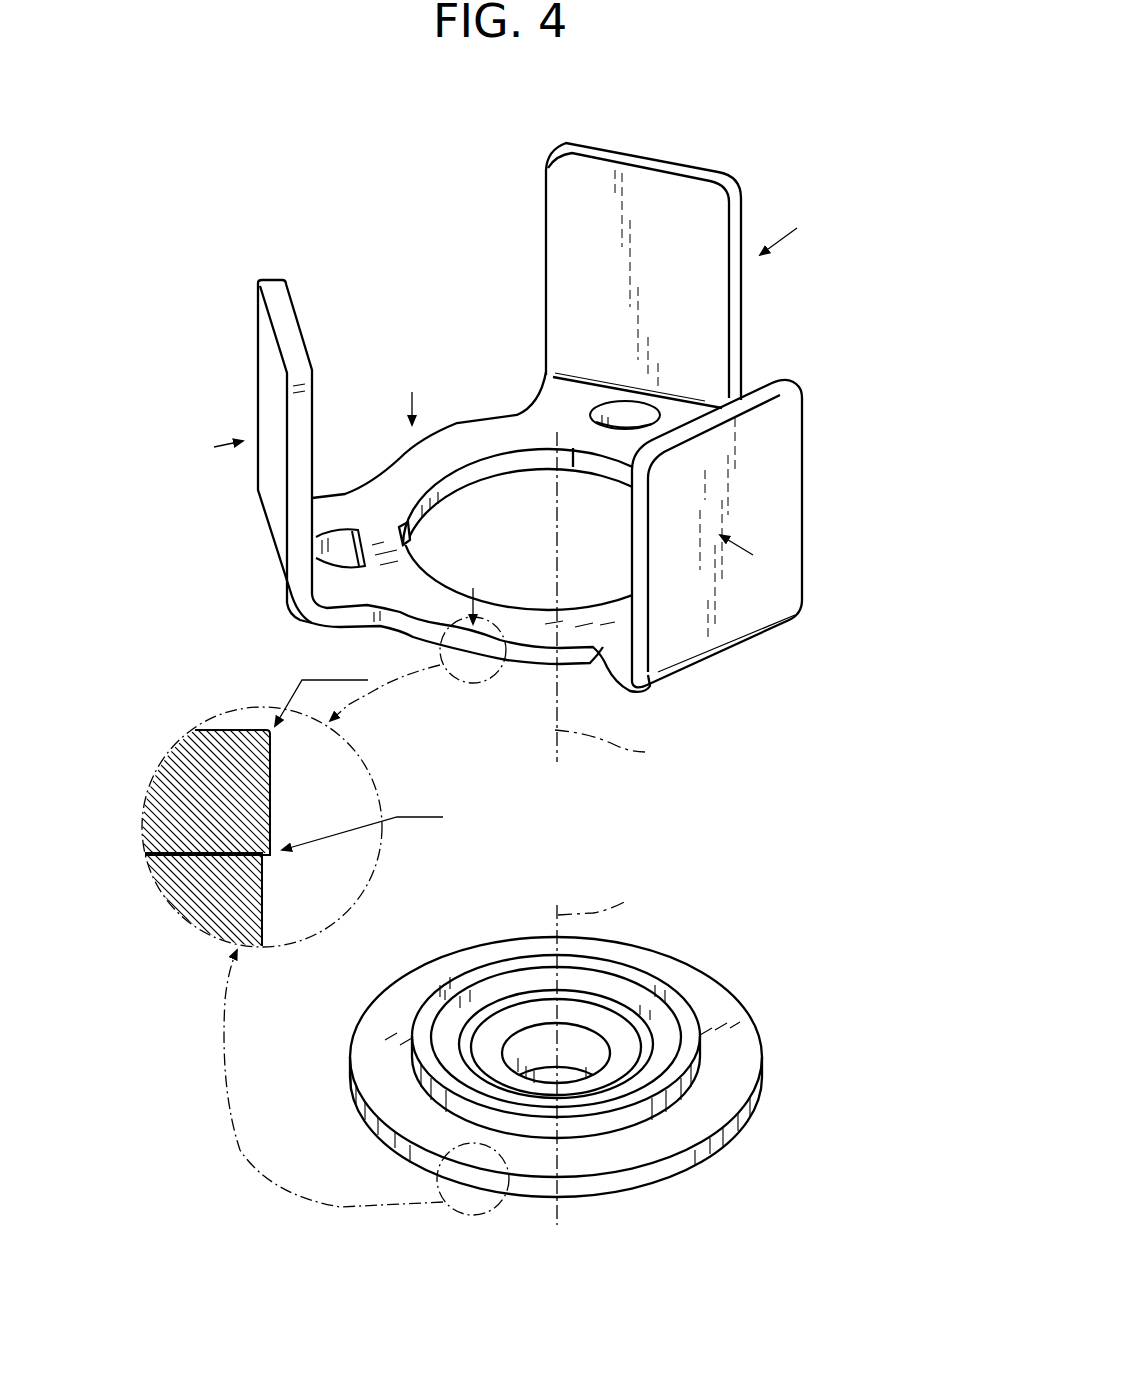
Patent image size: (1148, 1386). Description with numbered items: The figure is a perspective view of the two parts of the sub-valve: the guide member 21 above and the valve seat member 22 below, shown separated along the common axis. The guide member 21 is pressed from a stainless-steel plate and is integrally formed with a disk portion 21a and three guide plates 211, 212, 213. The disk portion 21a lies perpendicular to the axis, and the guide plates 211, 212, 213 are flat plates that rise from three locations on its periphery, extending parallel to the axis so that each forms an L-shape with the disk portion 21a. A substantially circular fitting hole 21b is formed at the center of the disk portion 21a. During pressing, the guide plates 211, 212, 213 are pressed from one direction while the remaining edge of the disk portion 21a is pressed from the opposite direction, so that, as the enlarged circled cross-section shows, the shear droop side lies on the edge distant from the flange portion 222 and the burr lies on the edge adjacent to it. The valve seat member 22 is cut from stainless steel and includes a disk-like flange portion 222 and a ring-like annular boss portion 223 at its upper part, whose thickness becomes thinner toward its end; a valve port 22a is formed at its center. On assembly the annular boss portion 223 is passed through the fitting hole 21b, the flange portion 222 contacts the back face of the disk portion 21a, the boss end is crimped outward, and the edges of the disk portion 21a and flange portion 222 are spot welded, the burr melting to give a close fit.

The guide member 21 is at (836, 364).
The guide plate 211 is at (268, 343).
The guide plate 212 is at (767, 463).
The guide plate 213 is at (650, 163).
The disk portion 21a is at (387, 487).
The fitting hole 21b is at (488, 467).
The valve seat member 22 is at (770, 938).
The valve port 22a is at (527, 1050).
The flange portion 222 is at (727, 1072).
The annular boss portion 223 is at (637, 1102).